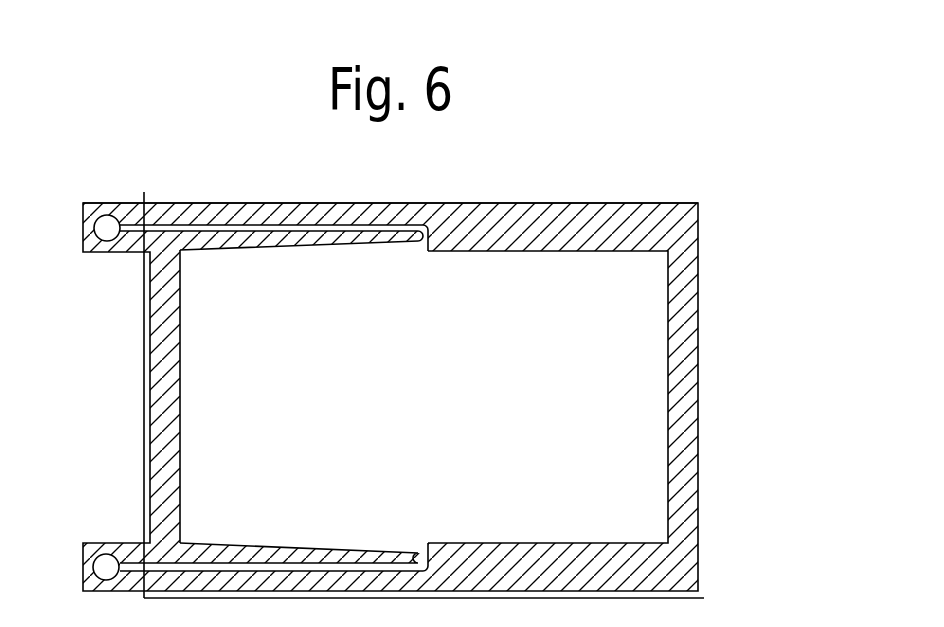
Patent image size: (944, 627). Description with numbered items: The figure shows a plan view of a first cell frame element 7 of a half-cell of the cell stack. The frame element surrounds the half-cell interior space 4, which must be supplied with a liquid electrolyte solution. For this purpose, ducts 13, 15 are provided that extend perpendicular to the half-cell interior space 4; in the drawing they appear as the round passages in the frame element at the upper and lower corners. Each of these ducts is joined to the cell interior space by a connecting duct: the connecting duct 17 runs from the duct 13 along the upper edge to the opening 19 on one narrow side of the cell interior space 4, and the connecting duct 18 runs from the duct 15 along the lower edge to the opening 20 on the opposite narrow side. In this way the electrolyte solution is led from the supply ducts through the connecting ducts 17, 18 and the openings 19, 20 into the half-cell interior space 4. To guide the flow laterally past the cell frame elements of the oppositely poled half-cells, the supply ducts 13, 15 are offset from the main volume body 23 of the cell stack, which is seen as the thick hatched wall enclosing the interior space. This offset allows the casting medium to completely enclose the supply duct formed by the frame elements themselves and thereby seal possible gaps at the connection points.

The first cell frame element 7 is at (743, 193).
The main volume body 23 is at (297, 200).
The half-cell interior space 4 is at (437, 432).
The connecting duct 17 is at (264, 233).
The opening 19 is at (427, 250).
The connecting duct 18 is at (289, 562).
The opening 20 is at (425, 541).
The duct 13 is at (106, 232).
The duct 15 is at (103, 562).